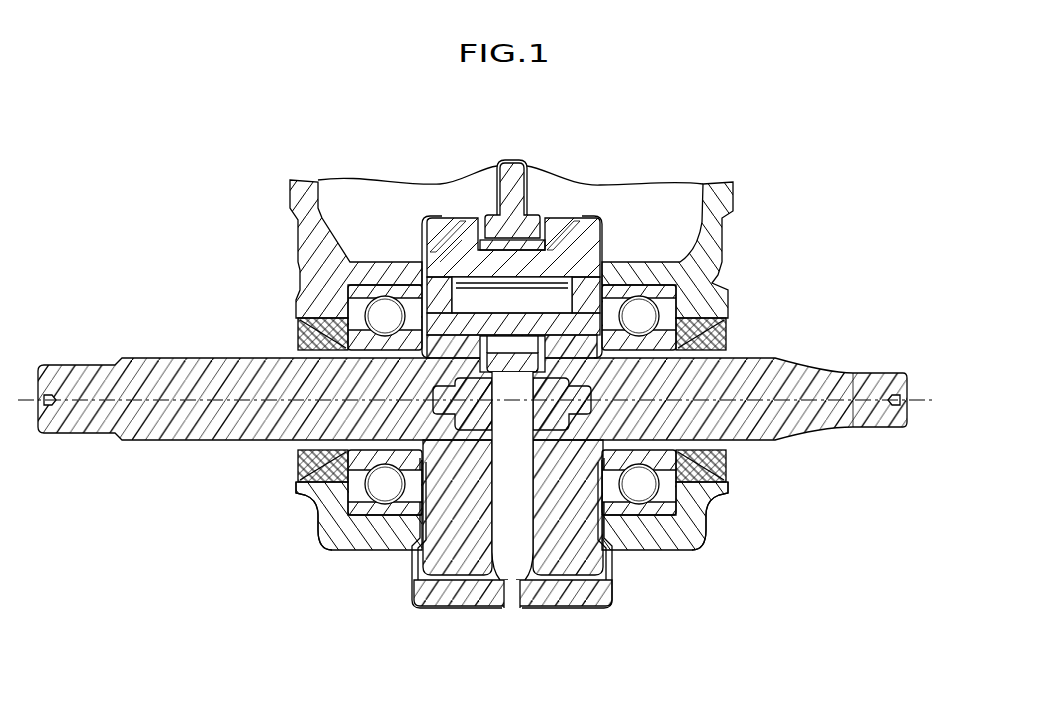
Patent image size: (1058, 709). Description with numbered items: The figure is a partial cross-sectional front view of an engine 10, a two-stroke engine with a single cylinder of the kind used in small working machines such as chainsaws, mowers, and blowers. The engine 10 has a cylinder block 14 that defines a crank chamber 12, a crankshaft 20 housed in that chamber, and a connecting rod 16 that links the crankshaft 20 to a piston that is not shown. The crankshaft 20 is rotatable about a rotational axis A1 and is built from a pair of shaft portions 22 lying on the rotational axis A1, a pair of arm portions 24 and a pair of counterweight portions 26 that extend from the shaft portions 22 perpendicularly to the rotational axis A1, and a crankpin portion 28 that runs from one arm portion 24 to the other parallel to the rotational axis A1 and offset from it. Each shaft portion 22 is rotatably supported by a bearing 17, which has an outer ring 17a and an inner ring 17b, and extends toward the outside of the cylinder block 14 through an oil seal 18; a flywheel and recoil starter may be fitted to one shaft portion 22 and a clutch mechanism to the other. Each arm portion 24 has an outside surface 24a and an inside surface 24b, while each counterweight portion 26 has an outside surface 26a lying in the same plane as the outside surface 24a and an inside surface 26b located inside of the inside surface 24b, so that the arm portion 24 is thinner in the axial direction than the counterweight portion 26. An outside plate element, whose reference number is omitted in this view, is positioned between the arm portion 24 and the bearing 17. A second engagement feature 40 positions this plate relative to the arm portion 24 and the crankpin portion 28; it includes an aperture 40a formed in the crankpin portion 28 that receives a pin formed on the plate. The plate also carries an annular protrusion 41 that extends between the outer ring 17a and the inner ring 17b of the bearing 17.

The engine 10 is at (192, 291).
The crank chamber 12 is at (686, 205).
The cylinder block 14 is at (728, 252).
The connecting rod 16 is at (490, 220).
The bearing 17 is at (363, 527).
The outer ring 17a is at (318, 508).
The inner ring 17b is at (298, 488).
The oil seal 18 is at (297, 465).
The crankshaft 20 is at (872, 366).
The shaft portions 22 is at (173, 441).
The arm portions 24 is at (440, 232).
The outside surface 24a is at (420, 240).
The inside surface 24b is at (468, 232).
The counterweight portions 26 is at (421, 602).
The outside surface 26a is at (412, 565).
The inside surface 26b is at (519, 588).
The crankpin portion 28 is at (462, 240).
The second engagement feature 40 is at (512, 400).
The aperture 40a is at (703, 290).
The annular protrusion 41 is at (417, 475).
The rotational axis A1 is at (920, 398).